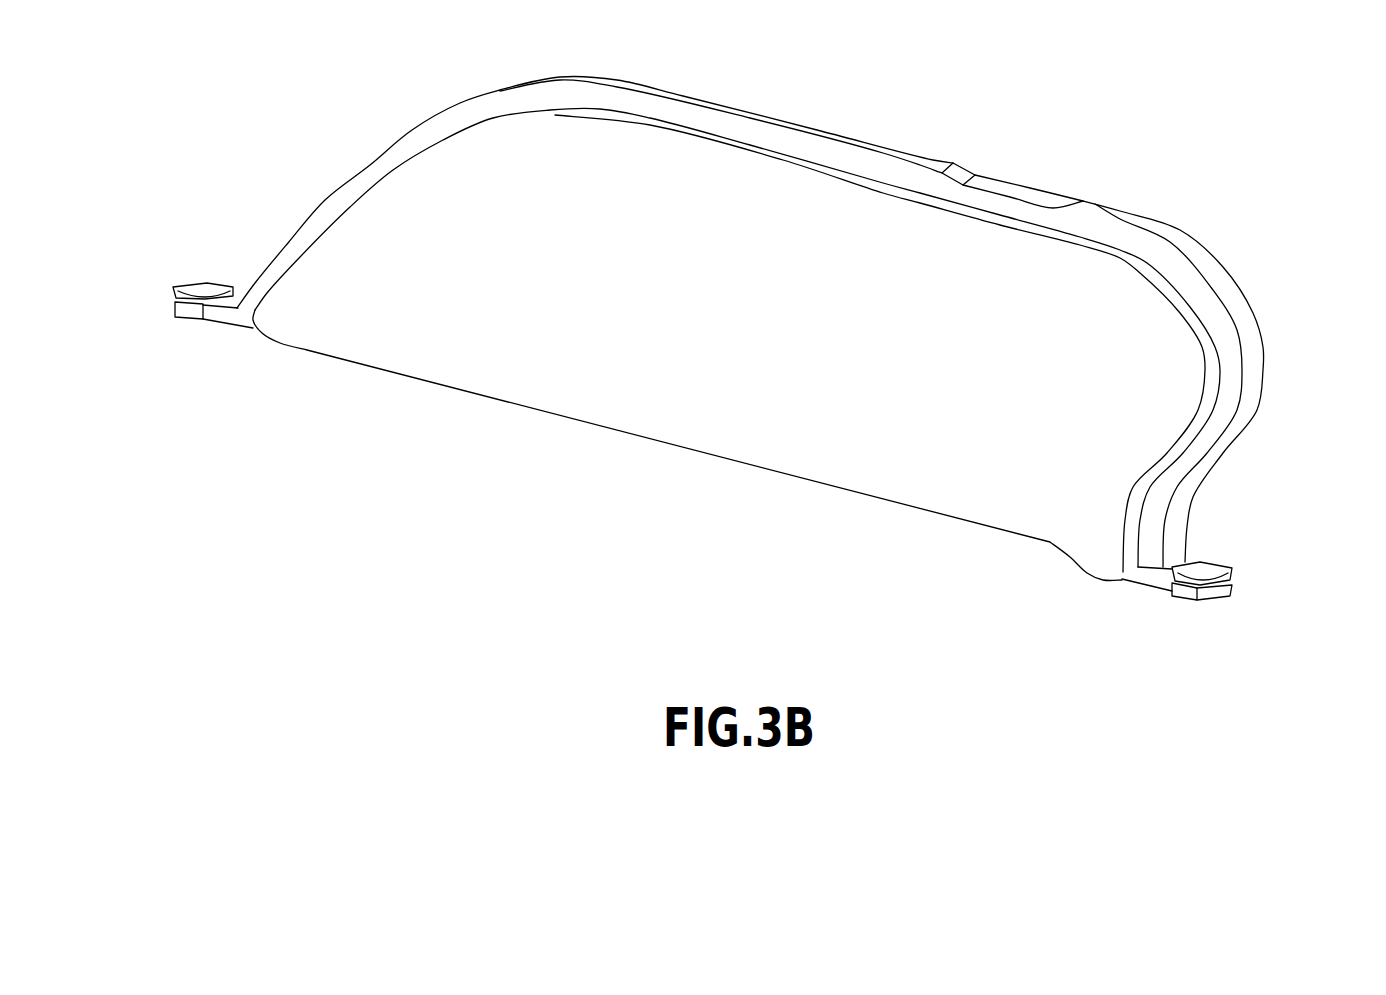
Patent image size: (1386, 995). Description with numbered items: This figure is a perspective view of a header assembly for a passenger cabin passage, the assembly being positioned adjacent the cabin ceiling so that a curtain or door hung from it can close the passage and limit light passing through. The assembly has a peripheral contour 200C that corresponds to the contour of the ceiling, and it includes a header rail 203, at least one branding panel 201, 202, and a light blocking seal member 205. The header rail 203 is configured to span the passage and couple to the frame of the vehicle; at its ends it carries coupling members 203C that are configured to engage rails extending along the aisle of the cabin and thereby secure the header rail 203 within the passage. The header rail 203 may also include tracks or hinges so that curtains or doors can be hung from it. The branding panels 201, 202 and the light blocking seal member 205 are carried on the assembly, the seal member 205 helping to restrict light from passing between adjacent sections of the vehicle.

The peripheral contour 200C is at (933, 160).
The branding panel 201 is at (877, 468).
The branding panel 202 is at (1267, 385).
The header rail 203 is at (1147, 587).
The coupling members 203C is at (187, 282).
The light blocking seal member 205 is at (1245, 295).